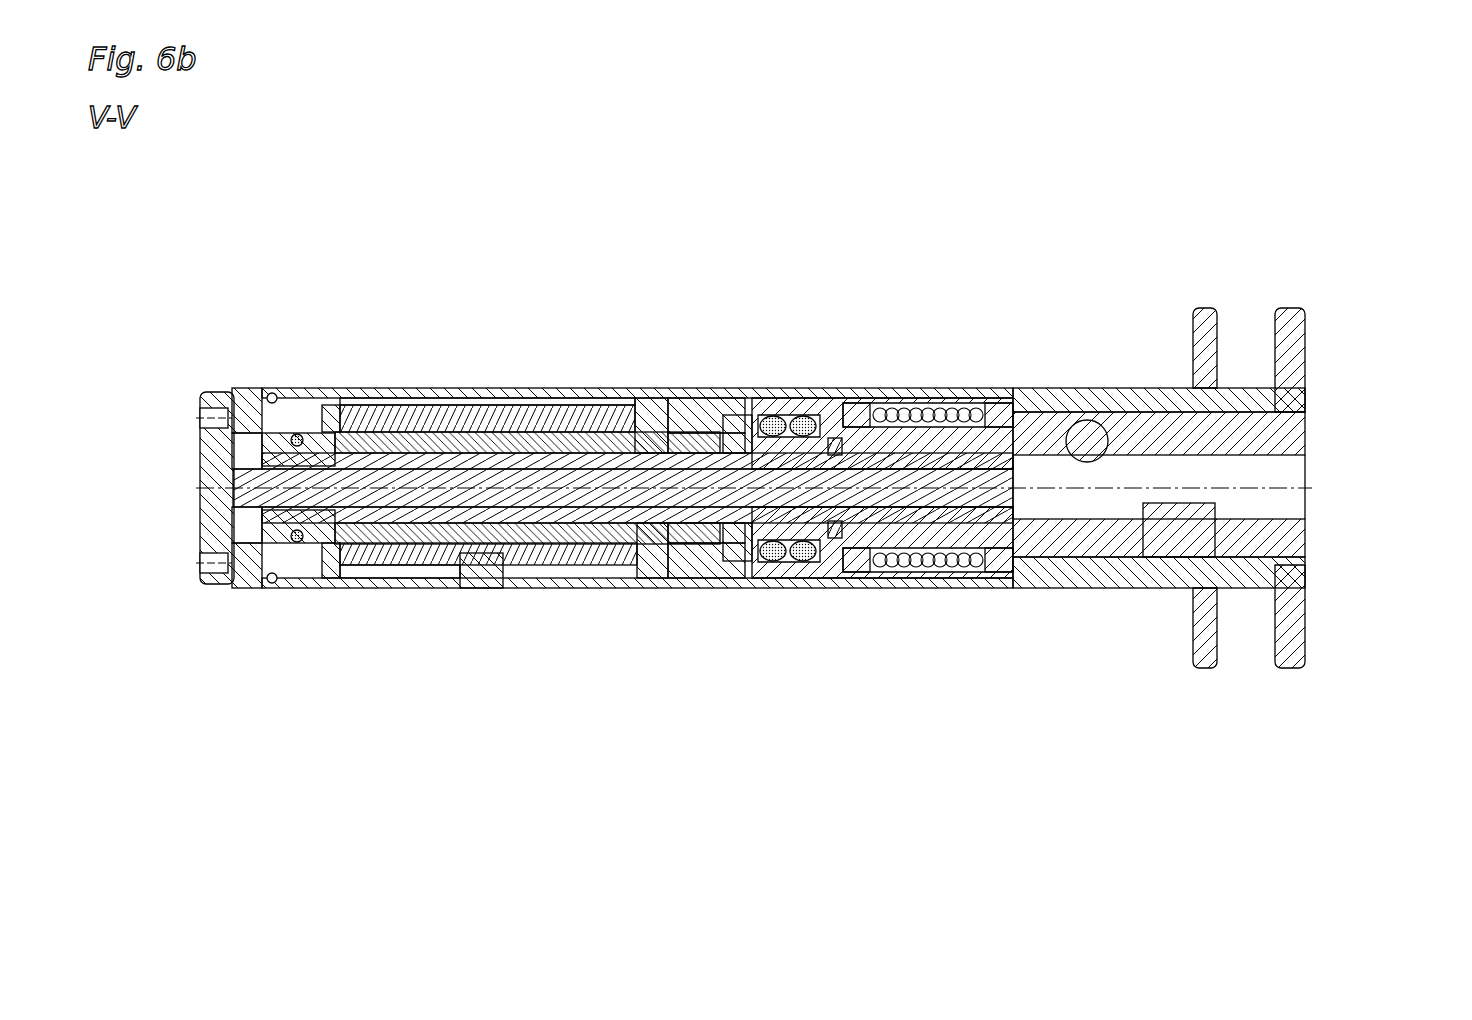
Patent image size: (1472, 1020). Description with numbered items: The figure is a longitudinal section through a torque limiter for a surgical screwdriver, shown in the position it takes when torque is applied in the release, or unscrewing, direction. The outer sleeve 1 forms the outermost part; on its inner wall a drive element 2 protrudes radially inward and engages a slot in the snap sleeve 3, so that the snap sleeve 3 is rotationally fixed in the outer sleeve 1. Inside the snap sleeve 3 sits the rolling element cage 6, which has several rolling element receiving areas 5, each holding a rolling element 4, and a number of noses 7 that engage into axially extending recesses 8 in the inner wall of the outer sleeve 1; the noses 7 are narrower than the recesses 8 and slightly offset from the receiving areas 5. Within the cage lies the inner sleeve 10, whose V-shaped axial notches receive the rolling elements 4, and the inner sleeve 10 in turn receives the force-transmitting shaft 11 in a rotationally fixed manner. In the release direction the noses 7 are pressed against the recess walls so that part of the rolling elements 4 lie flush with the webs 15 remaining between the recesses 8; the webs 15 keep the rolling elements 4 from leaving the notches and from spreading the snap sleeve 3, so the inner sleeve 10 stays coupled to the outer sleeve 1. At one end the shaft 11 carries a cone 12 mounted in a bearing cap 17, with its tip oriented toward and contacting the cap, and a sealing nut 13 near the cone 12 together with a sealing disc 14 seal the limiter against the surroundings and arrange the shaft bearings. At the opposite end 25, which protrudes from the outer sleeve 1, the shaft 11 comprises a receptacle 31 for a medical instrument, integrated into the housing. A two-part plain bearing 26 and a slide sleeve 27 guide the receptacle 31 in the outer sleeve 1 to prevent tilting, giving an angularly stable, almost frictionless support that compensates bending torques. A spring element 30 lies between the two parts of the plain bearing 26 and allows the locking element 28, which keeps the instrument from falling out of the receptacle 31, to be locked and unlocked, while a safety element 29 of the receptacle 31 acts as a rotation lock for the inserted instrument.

The outer sleeve 1 is at (410, 588).
The drive element 2 is at (478, 588).
The snap sleeve 3 is at (349, 388).
The rolling element 4 is at (515, 388).
The rolling element receiving area 5 is at (385, 388).
The rolling element cage 6 is at (665, 388).
The nose 7 is at (718, 587).
The recess 8 is at (675, 588).
The inner sleeve 10 is at (442, 388).
The force-transmitting shaft 11 is at (563, 388).
The cone 12 is at (242, 510).
The sealing nut 13 is at (243, 588).
The sealing disc 14 is at (815, 388).
The web 15 is at (646, 388).
The bearing cap 17 is at (212, 455).
The end of the shaft 25 is at (1283, 437).
The plain bearing 26 is at (866, 388).
The slide sleeve 27 is at (1228, 398).
The locking element 28 is at (1110, 420).
The safety element 29 is at (1180, 548).
The spring element 30 is at (955, 587).
The receptacle 31 is at (1305, 478).